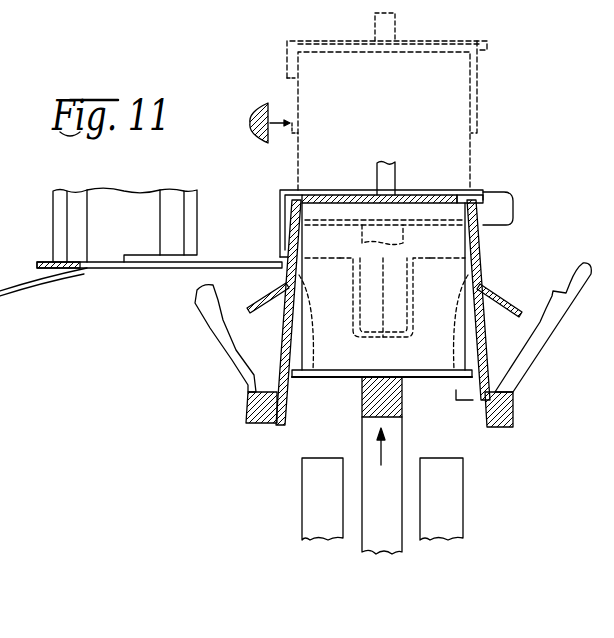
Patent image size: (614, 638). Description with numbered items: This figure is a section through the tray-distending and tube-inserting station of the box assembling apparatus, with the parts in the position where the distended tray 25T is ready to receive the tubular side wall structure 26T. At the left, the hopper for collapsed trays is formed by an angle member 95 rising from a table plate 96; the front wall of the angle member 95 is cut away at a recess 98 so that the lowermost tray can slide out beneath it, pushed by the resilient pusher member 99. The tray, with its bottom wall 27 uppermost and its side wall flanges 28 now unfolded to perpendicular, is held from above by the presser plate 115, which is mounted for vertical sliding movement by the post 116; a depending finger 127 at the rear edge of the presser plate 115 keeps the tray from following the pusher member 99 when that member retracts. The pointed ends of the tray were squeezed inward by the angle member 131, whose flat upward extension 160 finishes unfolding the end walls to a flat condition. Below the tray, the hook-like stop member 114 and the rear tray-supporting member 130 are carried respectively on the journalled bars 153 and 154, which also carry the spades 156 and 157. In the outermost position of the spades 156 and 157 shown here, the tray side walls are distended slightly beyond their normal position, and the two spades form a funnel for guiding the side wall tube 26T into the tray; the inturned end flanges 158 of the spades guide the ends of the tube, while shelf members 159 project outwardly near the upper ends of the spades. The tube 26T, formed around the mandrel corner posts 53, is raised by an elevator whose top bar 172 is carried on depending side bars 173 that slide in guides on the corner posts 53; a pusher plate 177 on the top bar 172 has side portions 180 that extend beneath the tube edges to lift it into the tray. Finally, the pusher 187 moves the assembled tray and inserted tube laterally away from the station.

The post 116 is at (375, 24).
The presser plate 115 is at (444, 40).
The bottom wall 27 is at (345, 192).
The distended tray 25T is at (410, 192).
The pusher 187 is at (248, 118).
The angle member 95 is at (75, 190).
The recess 98 is at (172, 250).
The table plate 96 is at (150, 268).
The pusher member 99 is at (22, 293).
The depending finger 127 is at (285, 213).
The side wall flange 28 is at (290, 238).
The shelf member 159 is at (270, 298).
The spade 157 is at (284, 330).
The tray-supporting member 130 is at (222, 345).
The tubular side wall structure 26T is at (297, 357).
The bar 154 is at (248, 410).
The inturned end flange 158 is at (288, 396).
The side portion 180 is at (303, 380).
The top bar 172 is at (362, 408).
The side bar 173 is at (403, 448).
The angle member 131 is at (395, 335).
The pusher plate 177 is at (430, 372).
The mandrel corner post 53 is at (302, 490).
The upward extension 160 is at (512, 205).
The spade 156 is at (485, 350).
The hook-like stop member 114 is at (553, 322).
The bar 153 is at (515, 404).